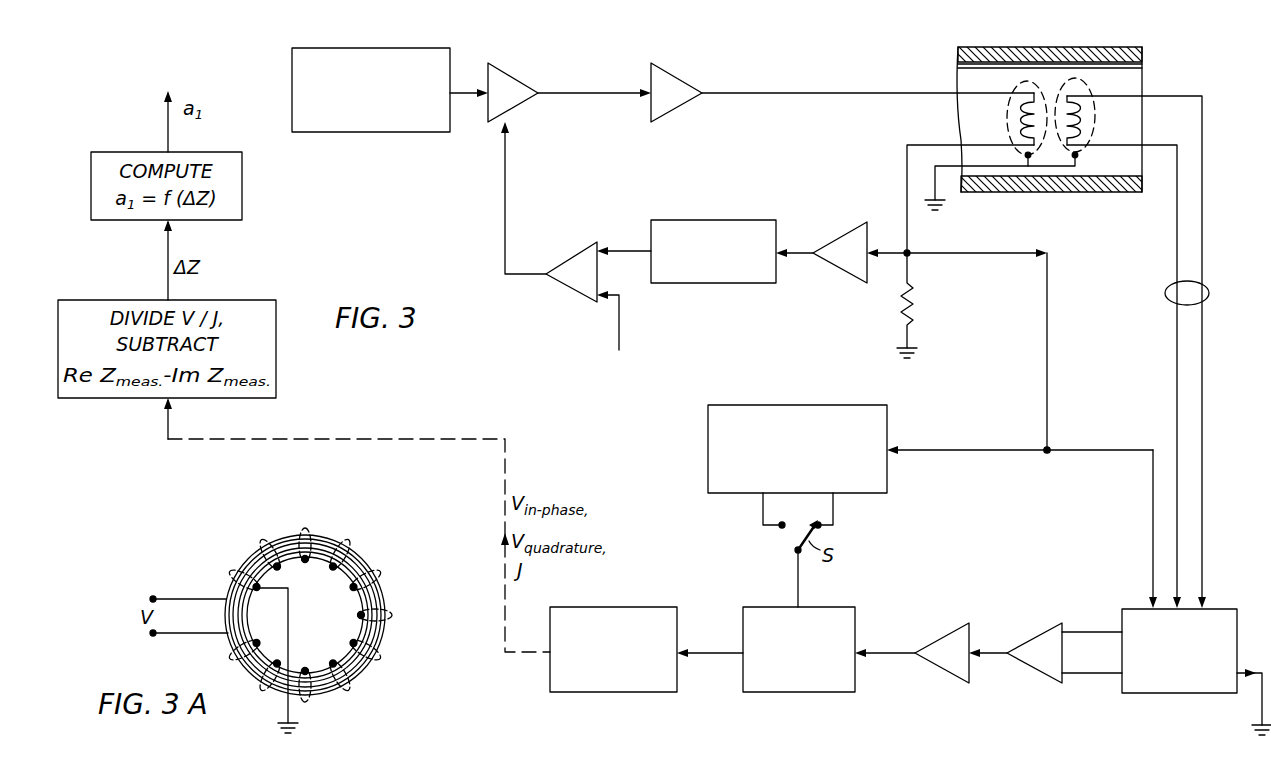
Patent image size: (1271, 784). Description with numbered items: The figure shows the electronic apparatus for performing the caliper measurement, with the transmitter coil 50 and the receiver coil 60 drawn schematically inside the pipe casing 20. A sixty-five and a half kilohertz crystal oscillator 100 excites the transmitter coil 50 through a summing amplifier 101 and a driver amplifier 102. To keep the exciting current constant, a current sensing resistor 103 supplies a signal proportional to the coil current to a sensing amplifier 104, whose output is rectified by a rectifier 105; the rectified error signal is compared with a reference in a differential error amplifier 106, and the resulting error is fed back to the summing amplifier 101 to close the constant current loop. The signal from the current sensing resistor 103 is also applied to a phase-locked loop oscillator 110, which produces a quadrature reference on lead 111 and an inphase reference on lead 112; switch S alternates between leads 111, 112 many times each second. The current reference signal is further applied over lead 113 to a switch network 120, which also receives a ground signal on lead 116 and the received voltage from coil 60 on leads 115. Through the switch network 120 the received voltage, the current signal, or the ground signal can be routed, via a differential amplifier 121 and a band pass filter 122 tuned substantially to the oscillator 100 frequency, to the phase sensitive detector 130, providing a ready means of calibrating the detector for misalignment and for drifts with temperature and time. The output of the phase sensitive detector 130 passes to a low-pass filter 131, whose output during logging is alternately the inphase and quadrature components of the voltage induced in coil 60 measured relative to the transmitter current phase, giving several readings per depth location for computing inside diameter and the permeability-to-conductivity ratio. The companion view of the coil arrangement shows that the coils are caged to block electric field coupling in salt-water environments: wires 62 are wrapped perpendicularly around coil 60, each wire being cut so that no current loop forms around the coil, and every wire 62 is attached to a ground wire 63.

In FIG. 3, the casing 20 is at (1107, 47).
In FIG. 3, the transmitter coil 50 is at (1025, 92).
In FIG. 3, the receiver coil 60 is at (1060, 90).
In FIG. 3A, the receiver coil 60 is at (326, 523).
In FIG. 3A, the wires 62 is at (377, 570).
In FIG. 3A, the ground wire 63 is at (294, 712).
In FIG. 3, the oscillator 100 is at (368, 48).
In FIG. 3, the summing amplifier 101 is at (512, 72).
In FIG. 3, the driver amplifier 102 is at (685, 80).
In FIG. 3, the current sensing resistor 103 is at (918, 307).
In FIG. 3, the sensing amplifier 104 is at (842, 230).
In FIG. 3, the rectifier 105 is at (707, 220).
In FIG. 3, the differential error amplifier 106 is at (567, 258).
In FIG. 3, the phase-locked loop oscillator 110 is at (778, 406).
In FIG. 3, the lead 111 is at (835, 517).
In FIG. 3, the lead 112 is at (763, 515).
In FIG. 3, the current signal lead 113 is at (1153, 514).
In FIG. 3, the leads 115 is at (1209, 297).
In FIG. 3, the ground signal lead 116 is at (1262, 673).
In FIG. 3, the switch network 120 is at (1175, 697).
In FIG. 3, the differential amplifier 121 is at (1057, 683).
In FIG. 3, the band pass filter 122 is at (940, 637).
In FIG. 3, the phase sensitive detector 130 is at (815, 695).
In FIG. 3, the low-pass filter 131 is at (620, 693).